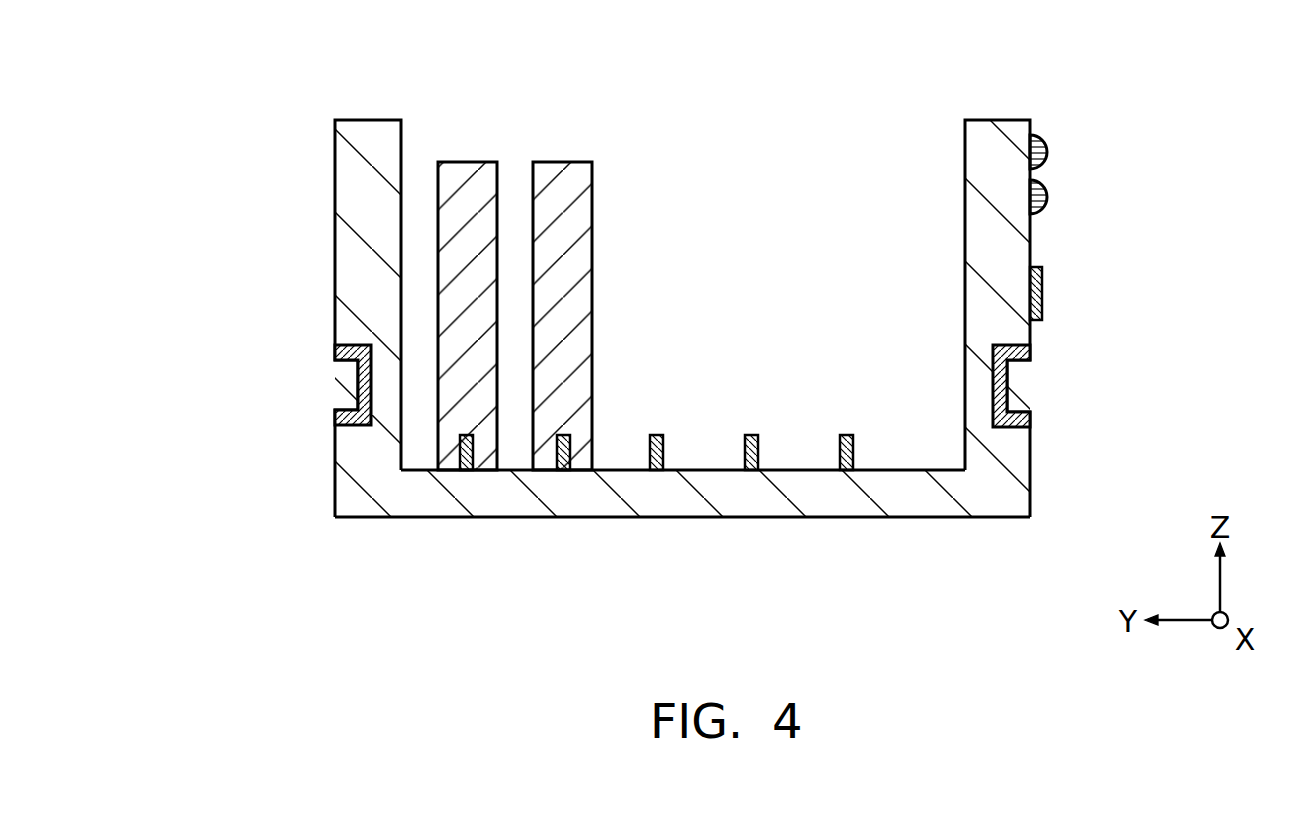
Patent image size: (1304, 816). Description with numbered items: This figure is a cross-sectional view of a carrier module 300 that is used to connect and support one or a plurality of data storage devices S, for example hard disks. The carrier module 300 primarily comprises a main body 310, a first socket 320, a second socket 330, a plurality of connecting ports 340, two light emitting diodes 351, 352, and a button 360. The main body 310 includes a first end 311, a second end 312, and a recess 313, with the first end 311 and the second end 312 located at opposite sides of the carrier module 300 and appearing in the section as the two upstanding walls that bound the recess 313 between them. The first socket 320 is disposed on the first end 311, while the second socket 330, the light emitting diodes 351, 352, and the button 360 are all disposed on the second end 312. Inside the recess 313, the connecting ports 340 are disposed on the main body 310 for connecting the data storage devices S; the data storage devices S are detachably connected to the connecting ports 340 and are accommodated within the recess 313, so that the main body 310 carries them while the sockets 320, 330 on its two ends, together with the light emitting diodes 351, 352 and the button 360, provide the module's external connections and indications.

The carrier module 300 is at (692, 315).
The main body 310 is at (910, 494).
The first end 311 is at (336, 234).
The second end 312 is at (1031, 492).
The recess 313 is at (798, 207).
The first socket 320 is at (335, 418).
The second socket 330 is at (1031, 418).
The connecting ports 340 is at (752, 435).
The light emitting diode 351 is at (1048, 150).
The light emitting diode 352 is at (1048, 197).
The button 360 is at (1043, 292).
The data storage devices S is at (562, 180).